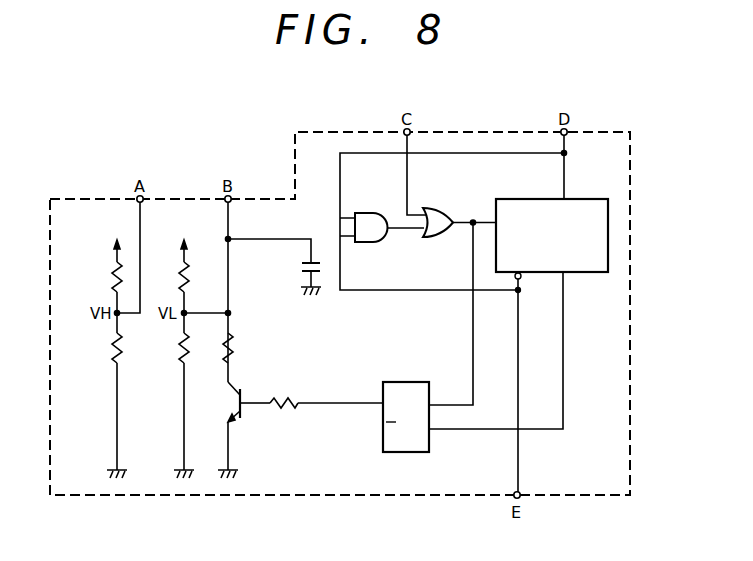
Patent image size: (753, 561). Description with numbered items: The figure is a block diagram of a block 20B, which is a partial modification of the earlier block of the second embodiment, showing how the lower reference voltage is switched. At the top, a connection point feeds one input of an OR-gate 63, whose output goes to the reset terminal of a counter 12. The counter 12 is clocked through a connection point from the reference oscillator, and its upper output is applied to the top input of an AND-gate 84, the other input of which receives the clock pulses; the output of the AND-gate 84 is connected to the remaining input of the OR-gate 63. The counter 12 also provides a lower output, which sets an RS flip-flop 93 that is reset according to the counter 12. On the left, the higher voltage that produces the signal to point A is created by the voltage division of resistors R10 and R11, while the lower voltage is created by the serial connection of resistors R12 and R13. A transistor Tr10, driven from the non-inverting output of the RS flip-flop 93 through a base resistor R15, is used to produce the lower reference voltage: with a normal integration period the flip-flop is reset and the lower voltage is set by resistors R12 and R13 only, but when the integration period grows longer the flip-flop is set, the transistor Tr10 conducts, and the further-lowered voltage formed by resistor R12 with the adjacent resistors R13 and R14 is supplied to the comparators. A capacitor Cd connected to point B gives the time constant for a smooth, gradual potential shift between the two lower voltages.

The block 20B is at (631, 148).
The counter 12 is at (575, 199).
The AND-gate 84 is at (359, 213).
The OR-gate 63 is at (432, 208).
The RS flip-flop 93 is at (407, 382).
The resistor R10 is at (101, 276).
The resistor R11 is at (103, 395).
The resistor R12 is at (199, 276).
The resistor R13 is at (170, 395).
The resistor R14 is at (249, 351).
The resistor R15 is at (326, 413).
The transistor Tr10 is at (229, 430).
The capacitor Cd is at (274, 267).